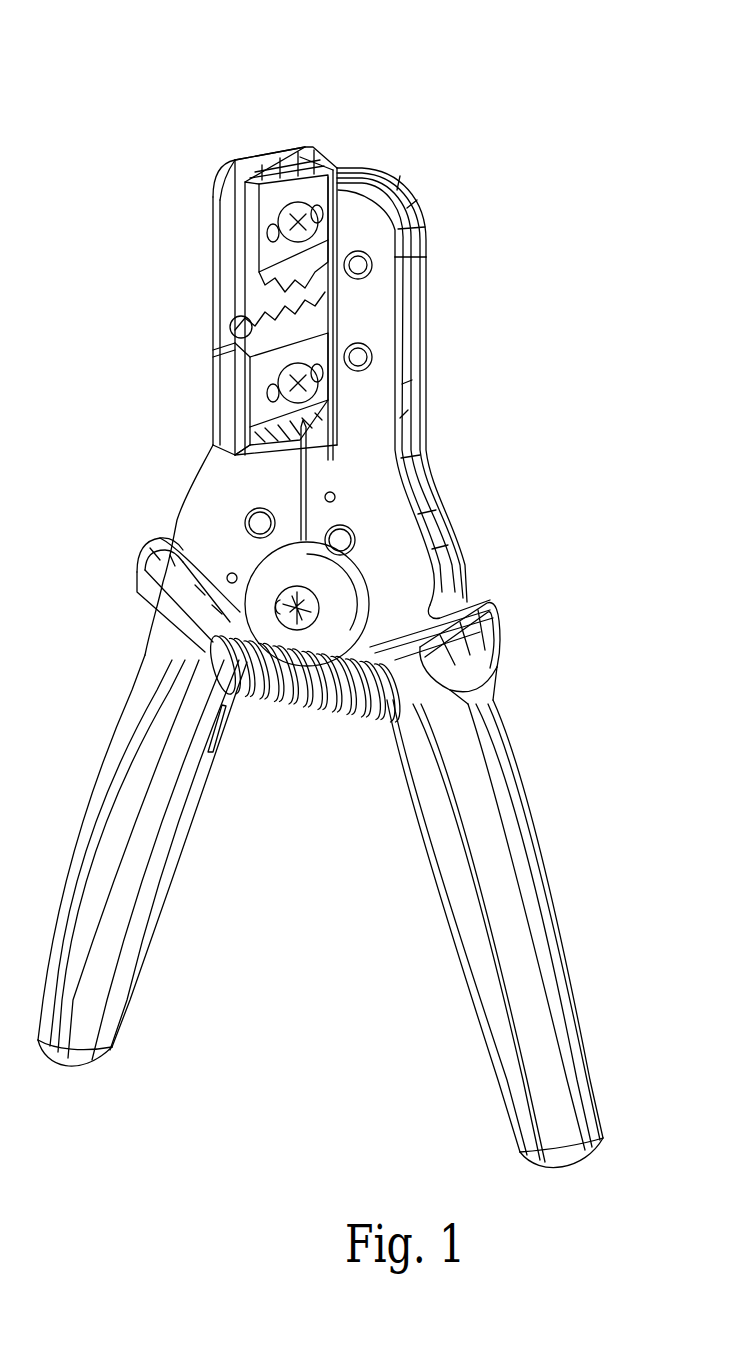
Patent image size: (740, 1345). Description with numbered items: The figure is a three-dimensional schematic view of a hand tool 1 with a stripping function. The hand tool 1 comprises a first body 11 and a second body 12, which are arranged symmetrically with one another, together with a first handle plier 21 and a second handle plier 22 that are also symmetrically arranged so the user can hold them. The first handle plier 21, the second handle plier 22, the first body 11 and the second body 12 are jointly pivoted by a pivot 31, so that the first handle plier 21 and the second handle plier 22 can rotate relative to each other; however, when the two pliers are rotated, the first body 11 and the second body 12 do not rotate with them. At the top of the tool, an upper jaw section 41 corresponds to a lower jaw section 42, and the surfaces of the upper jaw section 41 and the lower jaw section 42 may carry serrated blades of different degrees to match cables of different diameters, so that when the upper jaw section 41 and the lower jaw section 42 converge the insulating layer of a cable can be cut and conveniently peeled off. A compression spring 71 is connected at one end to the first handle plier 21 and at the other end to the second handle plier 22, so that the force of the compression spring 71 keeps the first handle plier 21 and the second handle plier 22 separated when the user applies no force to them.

The hand tool 1 is at (580, 85).
The first body 11 is at (425, 255).
The second body 12 is at (213, 297).
The upper jaw section 41 is at (312, 148).
The lower jaw section 42 is at (237, 407).
The pivot 31 is at (300, 598).
The compression spring 71 is at (301, 725).
The second handle plier 22 is at (125, 730).
The first handle plier 21 is at (492, 715).